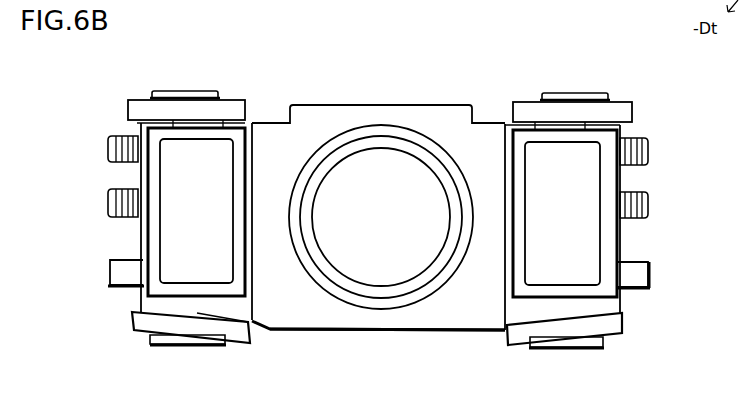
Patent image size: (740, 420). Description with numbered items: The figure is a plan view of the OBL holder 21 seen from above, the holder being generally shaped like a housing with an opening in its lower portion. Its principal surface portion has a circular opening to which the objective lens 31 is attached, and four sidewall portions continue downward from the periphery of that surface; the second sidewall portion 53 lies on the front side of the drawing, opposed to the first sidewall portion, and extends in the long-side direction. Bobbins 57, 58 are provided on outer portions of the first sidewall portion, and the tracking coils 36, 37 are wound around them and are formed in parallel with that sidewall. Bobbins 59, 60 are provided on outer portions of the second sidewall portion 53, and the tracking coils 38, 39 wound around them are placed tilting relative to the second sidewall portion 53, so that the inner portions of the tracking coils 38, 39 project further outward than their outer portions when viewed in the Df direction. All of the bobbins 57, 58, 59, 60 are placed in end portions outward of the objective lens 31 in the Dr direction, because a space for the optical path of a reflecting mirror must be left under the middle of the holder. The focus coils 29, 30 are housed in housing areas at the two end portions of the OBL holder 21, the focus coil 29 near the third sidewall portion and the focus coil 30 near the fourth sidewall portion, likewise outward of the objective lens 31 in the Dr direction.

The OBL holder 21 is at (377, 61).
The focus coil 29 is at (603, 245).
The focus coil 30 is at (148, 236).
The objective lens 31 is at (381, 217).
The tracking coil 36 is at (130, 106).
The tracking coil 37 is at (633, 112).
The tracking coil 38 is at (623, 327).
The tracking coil 39 is at (132, 327).
The second sidewall portion 53 is at (347, 332).
The bobbin 57 is at (167, 92).
The bobbin 58 is at (563, 93).
The bobbin 59 is at (537, 347).
The bobbin 60 is at (172, 347).